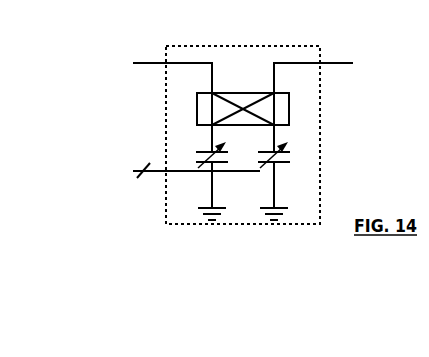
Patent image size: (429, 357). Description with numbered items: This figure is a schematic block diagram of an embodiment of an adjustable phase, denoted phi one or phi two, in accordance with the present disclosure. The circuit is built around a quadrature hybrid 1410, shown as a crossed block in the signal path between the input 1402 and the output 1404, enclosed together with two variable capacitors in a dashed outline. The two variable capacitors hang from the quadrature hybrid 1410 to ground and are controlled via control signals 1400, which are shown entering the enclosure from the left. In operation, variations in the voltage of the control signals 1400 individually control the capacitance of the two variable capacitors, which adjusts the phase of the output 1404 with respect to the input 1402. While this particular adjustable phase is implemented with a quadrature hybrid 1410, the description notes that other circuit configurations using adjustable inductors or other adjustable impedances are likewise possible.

The control signals 1400 is at (161, 161).
The input 1402 is at (145, 63).
The output 1404 is at (344, 63).
The quadrature hybrid 1410 is at (314, 110).